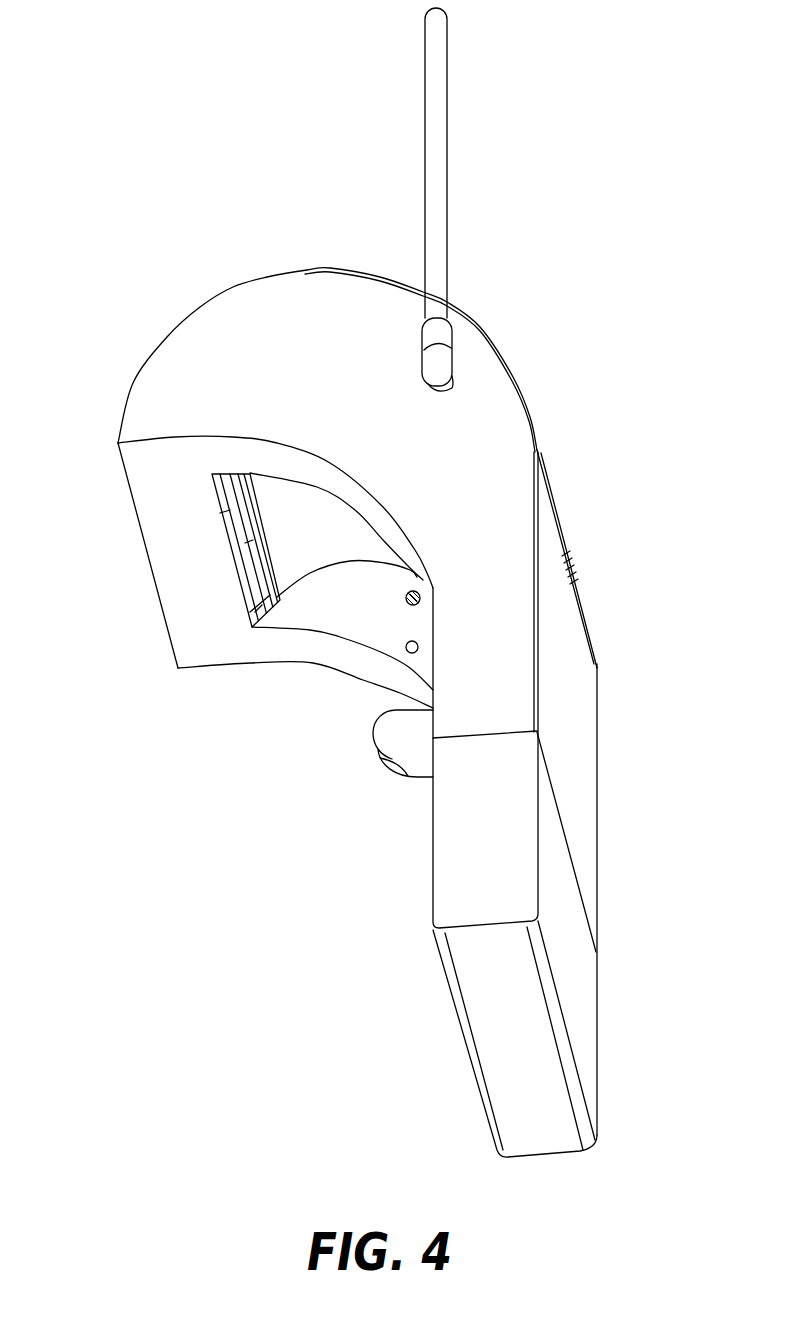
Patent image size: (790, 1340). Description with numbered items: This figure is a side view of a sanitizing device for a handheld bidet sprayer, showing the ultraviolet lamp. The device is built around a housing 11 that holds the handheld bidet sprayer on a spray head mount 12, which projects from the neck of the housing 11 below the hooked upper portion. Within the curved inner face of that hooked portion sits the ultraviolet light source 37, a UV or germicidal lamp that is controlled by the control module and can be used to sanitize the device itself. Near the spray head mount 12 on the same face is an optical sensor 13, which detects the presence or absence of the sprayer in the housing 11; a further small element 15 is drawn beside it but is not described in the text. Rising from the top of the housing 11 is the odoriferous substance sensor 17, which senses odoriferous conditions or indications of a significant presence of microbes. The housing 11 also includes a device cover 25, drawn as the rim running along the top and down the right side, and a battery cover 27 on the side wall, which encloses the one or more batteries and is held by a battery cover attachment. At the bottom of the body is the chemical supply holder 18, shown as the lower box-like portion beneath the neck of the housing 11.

The housing 11 is at (248, 320).
The odoriferous substance sensor 17 is at (475, 157).
The device cover 25 is at (543, 453).
The battery cover 27 is at (578, 743).
The chemical supply holder 18 is at (577, 1020).
The ultraviolet light source 37 is at (230, 512).
The screw 15 is at (405, 602).
The optical sensor 13 is at (406, 648).
The spray head mount 12 is at (392, 779).